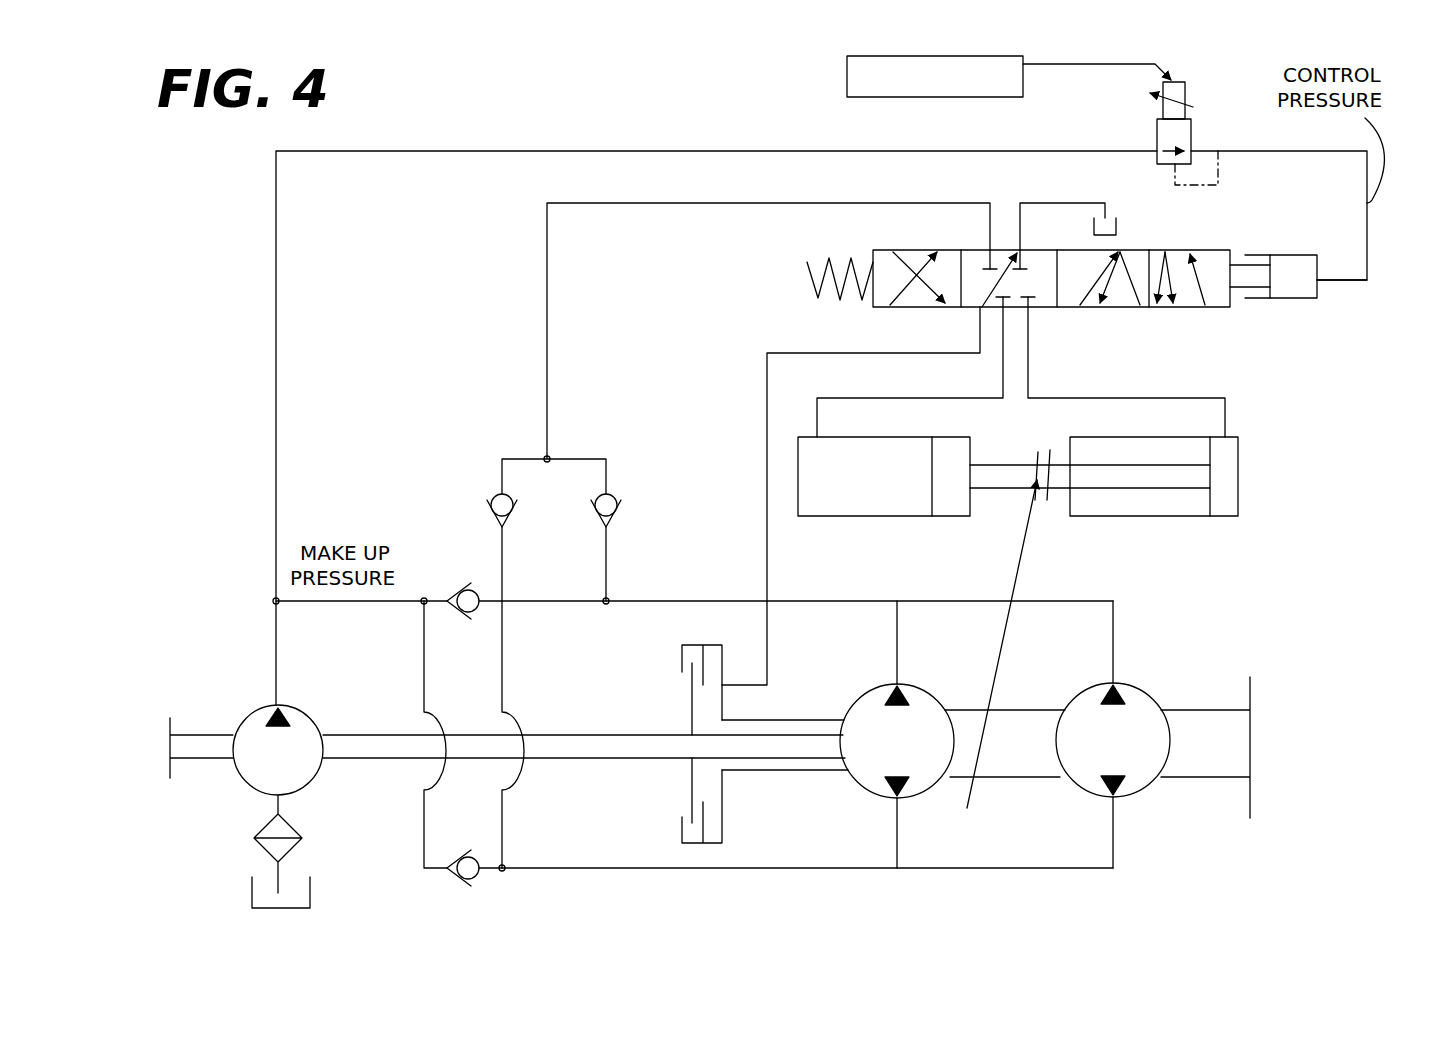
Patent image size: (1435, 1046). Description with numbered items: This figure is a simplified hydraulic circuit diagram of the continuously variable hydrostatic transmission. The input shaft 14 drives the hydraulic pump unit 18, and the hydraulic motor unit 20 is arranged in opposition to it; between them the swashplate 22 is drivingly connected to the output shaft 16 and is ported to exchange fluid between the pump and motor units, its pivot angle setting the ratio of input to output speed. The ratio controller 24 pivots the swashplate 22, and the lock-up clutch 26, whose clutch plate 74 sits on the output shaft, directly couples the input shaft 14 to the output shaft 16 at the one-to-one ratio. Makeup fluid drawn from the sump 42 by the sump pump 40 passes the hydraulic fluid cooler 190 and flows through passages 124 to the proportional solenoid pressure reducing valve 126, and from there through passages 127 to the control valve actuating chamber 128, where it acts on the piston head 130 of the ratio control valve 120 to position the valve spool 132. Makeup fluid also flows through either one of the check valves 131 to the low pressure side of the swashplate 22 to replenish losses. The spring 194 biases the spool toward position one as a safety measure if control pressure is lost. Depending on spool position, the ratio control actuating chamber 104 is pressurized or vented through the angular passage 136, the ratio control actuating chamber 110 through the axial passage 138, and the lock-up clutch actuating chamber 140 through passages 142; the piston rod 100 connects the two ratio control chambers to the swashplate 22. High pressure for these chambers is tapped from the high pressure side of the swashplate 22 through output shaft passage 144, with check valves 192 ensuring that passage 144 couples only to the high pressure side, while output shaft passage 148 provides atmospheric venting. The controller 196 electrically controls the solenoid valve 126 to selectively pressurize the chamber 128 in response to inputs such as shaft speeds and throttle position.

The input shaft 14 is at (203, 746).
The output shaft 16 is at (1200, 733).
The hydraulic pump unit 18 is at (909, 753).
The hydraulic motor unit 20 is at (1124, 753).
The swashplate 22 is at (1002, 640).
The ratio controller 24 is at (1278, 372).
The lock-up clutch 26 is at (641, 708).
The sump pump 40 is at (290, 762).
The sump 42 is at (1118, 222).
The clutch plate 74 is at (690, 776).
The piston rod 100 is at (1050, 477).
The ratio control actuating chamber 104 is at (1240, 480).
The ratio control actuating chamber 110 is at (860, 490).
The ratio control valve 120 is at (905, 312).
The passages 124 is at (275, 496).
The proportional solenoid pressure reducing valve 126 is at (1178, 133).
The passages 127 is at (1369, 237).
The control valve actuating chamber 128 is at (1299, 290).
The piston head 130 is at (1273, 276).
The check valves 131 is at (461, 590).
The valve spool 132 is at (1233, 250).
The angular passage 136 is at (1115, 397).
The axial passage 138 is at (988, 400).
The lock-up clutch actuating chamber 140 is at (710, 800).
The passages 142 is at (765, 420).
The output shaft passage 144 is at (549, 296).
The output shaft passage 148 is at (1090, 210).
The hydraulic fluid cooler 190 is at (290, 838).
The check valves 192 is at (590, 523).
The spring 194 is at (847, 282).
The controller 196 is at (981, 97).